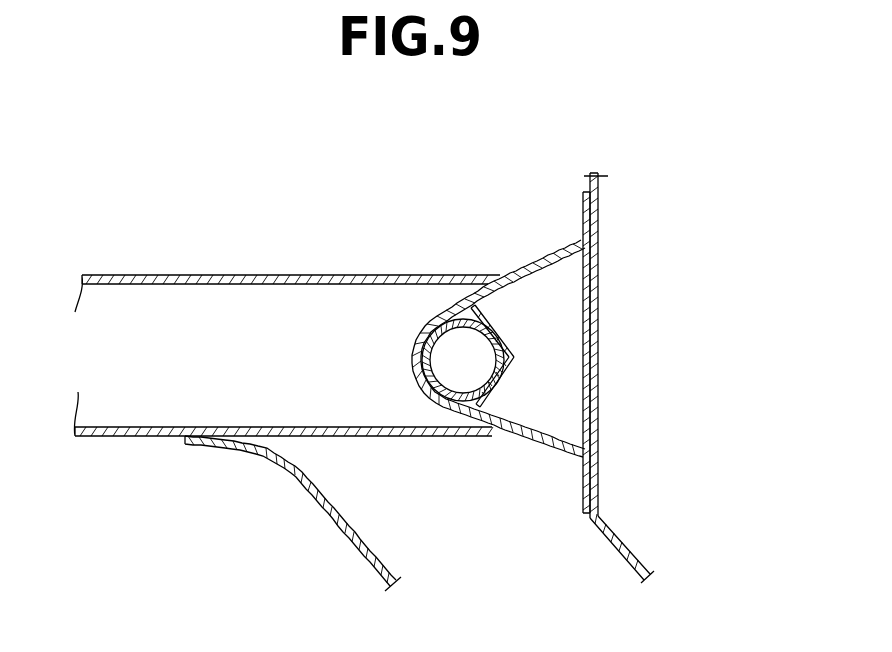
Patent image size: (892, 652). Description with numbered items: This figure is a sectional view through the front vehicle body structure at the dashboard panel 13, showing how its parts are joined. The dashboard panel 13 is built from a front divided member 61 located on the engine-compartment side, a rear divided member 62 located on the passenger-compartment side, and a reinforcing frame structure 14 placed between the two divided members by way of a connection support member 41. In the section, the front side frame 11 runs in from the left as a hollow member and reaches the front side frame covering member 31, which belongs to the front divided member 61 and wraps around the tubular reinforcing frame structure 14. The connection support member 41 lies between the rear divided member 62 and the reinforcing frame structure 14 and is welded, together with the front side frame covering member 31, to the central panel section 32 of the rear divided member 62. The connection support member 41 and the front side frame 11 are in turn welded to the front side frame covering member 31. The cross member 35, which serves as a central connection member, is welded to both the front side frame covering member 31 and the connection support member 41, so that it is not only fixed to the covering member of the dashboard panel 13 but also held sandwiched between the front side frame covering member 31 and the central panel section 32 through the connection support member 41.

The front side frame 11 is at (225, 273).
The dashboard panel 13 is at (678, 331).
The reinforcing frame structure 14 is at (437, 363).
The front side frame covering member 31 is at (455, 305).
The central panel section 32 is at (617, 533).
The cross member 35 is at (428, 404).
The connection support member 41 is at (600, 310).
The front divided member 61 is at (420, 315).
The rear divided member 62 is at (640, 358).